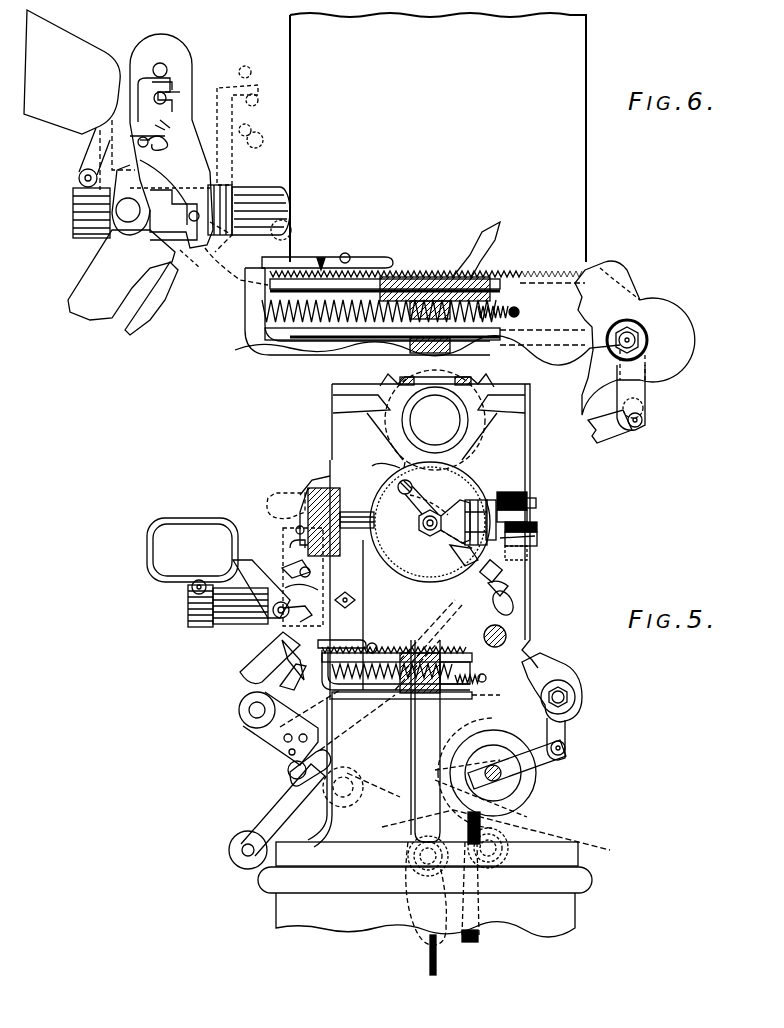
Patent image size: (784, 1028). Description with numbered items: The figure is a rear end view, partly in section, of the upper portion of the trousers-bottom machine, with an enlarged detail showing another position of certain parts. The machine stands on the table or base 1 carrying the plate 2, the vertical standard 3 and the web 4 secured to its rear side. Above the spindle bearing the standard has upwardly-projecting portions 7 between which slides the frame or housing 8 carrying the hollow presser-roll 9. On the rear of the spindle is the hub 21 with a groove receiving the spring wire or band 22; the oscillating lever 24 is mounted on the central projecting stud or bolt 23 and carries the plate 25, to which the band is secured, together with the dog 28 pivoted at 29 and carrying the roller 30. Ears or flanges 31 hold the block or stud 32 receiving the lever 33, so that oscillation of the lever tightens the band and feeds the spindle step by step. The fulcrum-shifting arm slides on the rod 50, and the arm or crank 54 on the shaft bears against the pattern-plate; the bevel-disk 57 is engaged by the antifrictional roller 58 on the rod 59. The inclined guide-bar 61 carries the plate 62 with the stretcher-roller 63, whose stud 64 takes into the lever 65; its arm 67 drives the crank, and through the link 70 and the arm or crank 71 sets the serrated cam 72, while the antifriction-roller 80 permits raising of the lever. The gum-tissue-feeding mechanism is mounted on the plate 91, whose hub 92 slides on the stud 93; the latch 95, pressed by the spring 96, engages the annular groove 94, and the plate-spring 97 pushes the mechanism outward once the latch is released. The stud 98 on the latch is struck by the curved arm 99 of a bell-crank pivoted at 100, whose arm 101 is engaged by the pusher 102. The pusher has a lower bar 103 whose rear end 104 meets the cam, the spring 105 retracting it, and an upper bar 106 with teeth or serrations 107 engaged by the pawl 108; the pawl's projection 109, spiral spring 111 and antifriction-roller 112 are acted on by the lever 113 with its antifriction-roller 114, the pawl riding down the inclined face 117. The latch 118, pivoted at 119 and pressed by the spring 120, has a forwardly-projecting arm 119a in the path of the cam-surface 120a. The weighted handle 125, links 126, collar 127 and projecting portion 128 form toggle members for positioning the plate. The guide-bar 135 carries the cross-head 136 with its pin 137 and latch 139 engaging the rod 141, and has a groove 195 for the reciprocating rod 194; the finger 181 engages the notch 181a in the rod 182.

In FIG. 5, the table or base 1 is at (425, 905).
In FIG. 5, the plate 2 is at (425, 867).
In FIG. 6, the vertical standard 3 is at (427, 189).
In FIG. 6, the web 4 is at (470, 343).
In FIG. 6, the upwardly-projecting portions 7 is at (332, 395).
In FIG. 6, the frame or housing 8 is at (384, 390).
In FIG. 6, the hollow presser-roll 9 is at (462, 398).
In FIG. 5, the hub 21 is at (430, 522).
In FIG. 5, the spring wire or band 22 is at (398, 470).
In FIG. 5, the central projecting stud or bolt 23 is at (419, 525).
In FIG. 5, the oscillating lever 24 is at (450, 516).
In FIG. 5, the plate 25 is at (525, 538).
In FIG. 5, the dog 28 is at (530, 494).
In FIG. 5, the pivot of dog 29 is at (540, 529).
In FIG. 5, the roller 30 is at (537, 504).
In FIG. 5, the projecting ears or flanges 31 is at (503, 500).
In FIG. 5, the block or stud 32 is at (489, 496).
In FIG. 5, the lever 33 is at (538, 516).
In FIG. 5, the rod 50 is at (508, 637).
In FIG. 5, the arm or crank 54 is at (496, 745).
In FIG. 5, the bevel-disk 57 is at (515, 805).
In FIG. 5, the antifrictional roller 58 is at (466, 820).
In FIG. 5, the rod 59 is at (505, 846).
In FIG. 5, the inclined guide-bar 61 is at (277, 816).
In FIG. 5, the plate 62 is at (325, 745).
In FIG. 5, the stretcher-roller 63 is at (238, 707).
In FIG. 5, the stud 64 is at (409, 741).
In FIG. 5, the lever 65 is at (290, 770).
In FIG. 5, the arm 67 is at (440, 780).
In FIG. 6, the link 70 is at (610, 426).
In FIG. 5, the link 70 is at (518, 764).
In FIG. 6, the arm or crank 71 is at (640, 381).
In FIG. 5, the arm or crank 71 is at (565, 736).
In FIG. 6, the serrated cam 72 is at (635, 338).
In FIG. 5, the serrated cam 72 is at (552, 687).
In FIG. 5, the antifriction-roller 80 is at (396, 838).
In FIG. 6, the plate 91 is at (123, 282).
In FIG. 5, the plate 91 is at (270, 658).
In FIG. 5, the hub 92 is at (296, 628).
In FIG. 6, the stud 93 is at (266, 205).
In FIG. 5, the stud 93 is at (222, 626).
In FIG. 6, the annular groove 94 is at (232, 200).
In FIG. 5, the annular groove 94 is at (290, 568).
In FIG. 6, the latch 95 is at (148, 110).
In FIG. 5, the latch 95 is at (296, 540).
In FIG. 6, the spring 96 is at (166, 148).
In FIG. 5, the plate-spring 97 is at (328, 700).
In FIG. 6, the stud 98 is at (140, 145).
In FIG. 5, the stud 98 is at (312, 572).
In FIG. 6, the curved arm 99 is at (170, 203).
In FIG. 5, the curved arm 99 is at (322, 590).
In FIG. 5, the pivot of bell-crank lever 100 is at (359, 599).
In FIG. 5, the arm 101 is at (285, 652).
In FIG. 5, the pusher 102 is at (293, 677).
In FIG. 6, the lower bar 103 is at (305, 340).
In FIG. 5, the lower bar 103 is at (396, 686).
In FIG. 6, the rear end 104 is at (492, 338).
In FIG. 5, the rear end 104 is at (416, 705).
In FIG. 6, the spring 105 is at (495, 308).
In FIG. 5, the spring 105 is at (478, 682).
In FIG. 6, the bar 106 is at (345, 292).
In FIG. 5, the bar 106 is at (392, 669).
In FIG. 6, the teeth or serrations 107 is at (412, 276).
In FIG. 5, the teeth or serrations 107 is at (396, 650).
In FIG. 6, the pawl 108 is at (478, 236).
In FIG. 5, the pawl 108 is at (452, 650).
In FIG. 5, the projection 109 is at (500, 572).
In FIG. 5, the spiral spring 111 is at (505, 590).
In FIG. 5, the antifriction-roller 112 is at (508, 605).
In FIG. 5, the lever 113 is at (461, 558).
In FIG. 5, the antifriction-roller 114 is at (411, 489).
In FIG. 6, the inclined face 117 is at (442, 278).
In FIG. 5, the inclined face 117 is at (435, 673).
In FIG. 6, the latch 118 is at (362, 262).
In FIG. 5, the latch 118 is at (370, 645).
In FIG. 6, the pivot of latch 119 is at (347, 254).
In FIG. 5, the pivot of latch 119 is at (374, 643).
In FIG. 6, the forwardly-projecting arm 119a is at (236, 175).
In FIG. 6, the spring 120 is at (322, 256).
In FIG. 5, the spring 120 is at (290, 636).
In FIG. 6, the cam-surface 120a is at (185, 255).
In FIG. 6, the weighted handle 125 is at (72, 72).
In FIG. 5, the weighted handle 125 is at (192, 550).
In FIG. 6, the links 126 is at (86, 160).
In FIG. 5, the links 126 is at (192, 587).
In FIG. 6, the collar 127 is at (88, 212).
In FIG. 5, the collar 127 is at (200, 608).
In FIG. 6, the projecting portion 128 is at (120, 171).
In FIG. 5, the guide-bar 135 is at (300, 490).
In FIG. 5, the cross-head 136 is at (336, 490).
In FIG. 5, the pin 137 is at (350, 510).
In FIG. 5, the latch 139 is at (286, 506).
In FIG. 6, the rod 141 is at (165, 70).
In FIG. 6, the finger 181 is at (172, 83).
In FIG. 6, the notch 181a is at (180, 95).
In FIG. 6, the rod 182 is at (166, 98).
In FIG. 5, the reciprocating rod 194 is at (357, 529).
In FIG. 5, the groove 195 is at (322, 483).